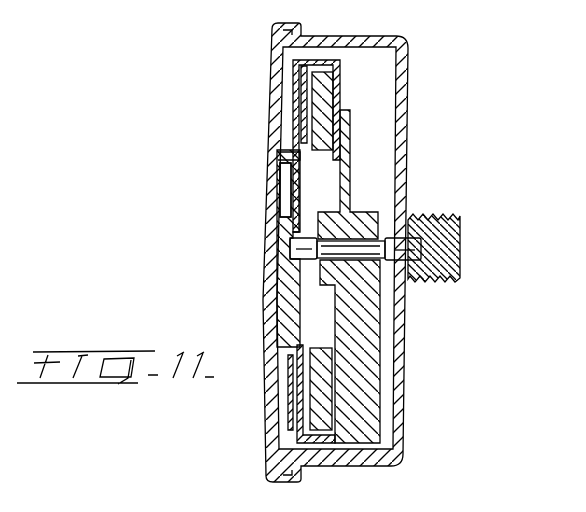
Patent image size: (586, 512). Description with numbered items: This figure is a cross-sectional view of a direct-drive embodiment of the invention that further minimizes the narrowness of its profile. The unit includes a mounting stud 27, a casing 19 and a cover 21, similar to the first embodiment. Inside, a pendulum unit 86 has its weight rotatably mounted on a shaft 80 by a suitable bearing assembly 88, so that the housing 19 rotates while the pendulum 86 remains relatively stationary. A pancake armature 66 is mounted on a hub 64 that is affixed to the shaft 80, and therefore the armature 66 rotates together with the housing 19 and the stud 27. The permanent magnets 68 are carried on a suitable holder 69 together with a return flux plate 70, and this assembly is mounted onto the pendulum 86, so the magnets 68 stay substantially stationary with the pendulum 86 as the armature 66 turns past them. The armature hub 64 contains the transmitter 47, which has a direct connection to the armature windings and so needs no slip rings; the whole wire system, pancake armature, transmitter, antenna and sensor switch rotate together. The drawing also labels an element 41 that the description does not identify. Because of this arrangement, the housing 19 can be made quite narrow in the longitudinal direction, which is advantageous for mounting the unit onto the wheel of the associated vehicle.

The casing 19 is at (402, 128).
The cover 21 is at (266, 192).
The mounting stud 27 is at (433, 213).
The screw head 41 is at (292, 247).
The transmitter 47 is at (287, 173).
The hub 64 is at (282, 325).
The pancake armature 66 is at (300, 345).
The permanent magnets 68 is at (323, 403).
The holder 69 is at (334, 108).
The return flux plate 70 is at (293, 86).
The shaft 80 is at (316, 262).
The pendulum unit 86 is at (372, 393).
The bearing assembly 88 is at (346, 222).